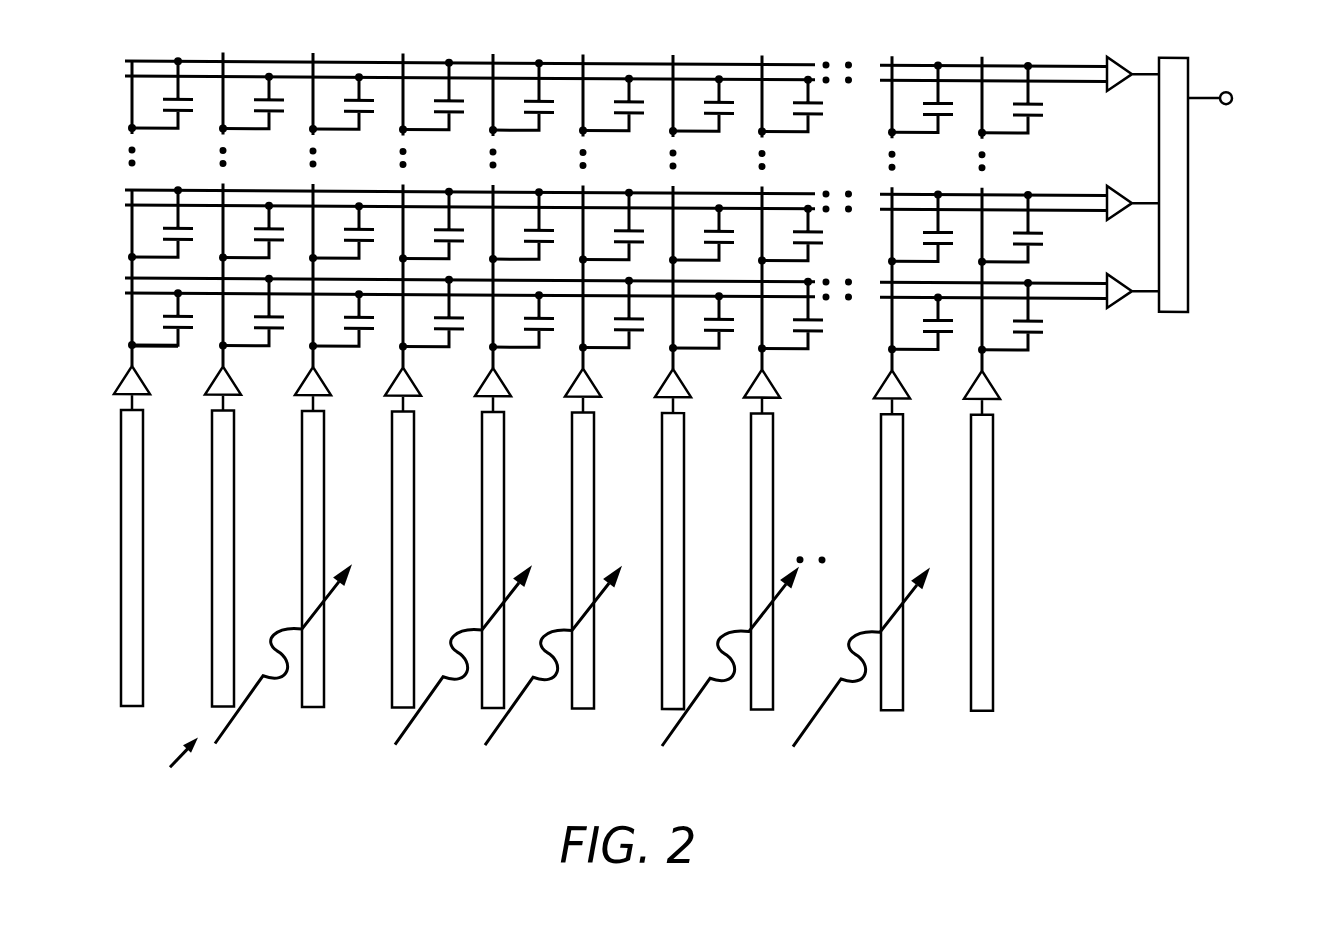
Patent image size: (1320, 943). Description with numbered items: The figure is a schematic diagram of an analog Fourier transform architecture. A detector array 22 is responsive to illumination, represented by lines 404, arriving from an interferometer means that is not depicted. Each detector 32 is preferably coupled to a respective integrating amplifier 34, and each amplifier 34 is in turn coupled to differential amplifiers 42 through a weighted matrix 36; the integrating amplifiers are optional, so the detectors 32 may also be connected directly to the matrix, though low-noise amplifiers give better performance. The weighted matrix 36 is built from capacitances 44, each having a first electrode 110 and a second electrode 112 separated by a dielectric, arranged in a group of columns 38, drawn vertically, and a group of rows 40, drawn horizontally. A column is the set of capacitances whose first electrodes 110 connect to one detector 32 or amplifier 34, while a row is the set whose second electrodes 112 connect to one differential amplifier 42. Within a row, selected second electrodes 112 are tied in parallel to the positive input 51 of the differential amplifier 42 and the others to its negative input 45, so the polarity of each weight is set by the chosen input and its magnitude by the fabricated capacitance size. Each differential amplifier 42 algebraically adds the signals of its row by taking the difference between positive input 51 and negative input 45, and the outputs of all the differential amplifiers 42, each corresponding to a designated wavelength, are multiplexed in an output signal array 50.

The detector array 22 is at (166, 767).
The detector 32 is at (312, 707).
The integrating amplifier 34 is at (118, 388).
The weighted matrix 36 is at (206, 40).
The group of columns 38 is at (110, 118).
The group of rows 40 is at (326, 42).
The differential amplifier 42 is at (1112, 53).
The capacitance 44 is at (548, 112).
The negative input 45 is at (1057, 77).
The output signal array 50 is at (1190, 306).
The positive input 51 is at (1047, 57).
The first electrode 110 is at (127, 344).
The second electrode 112 is at (180, 293).
The illumination lines 404 is at (417, 720).